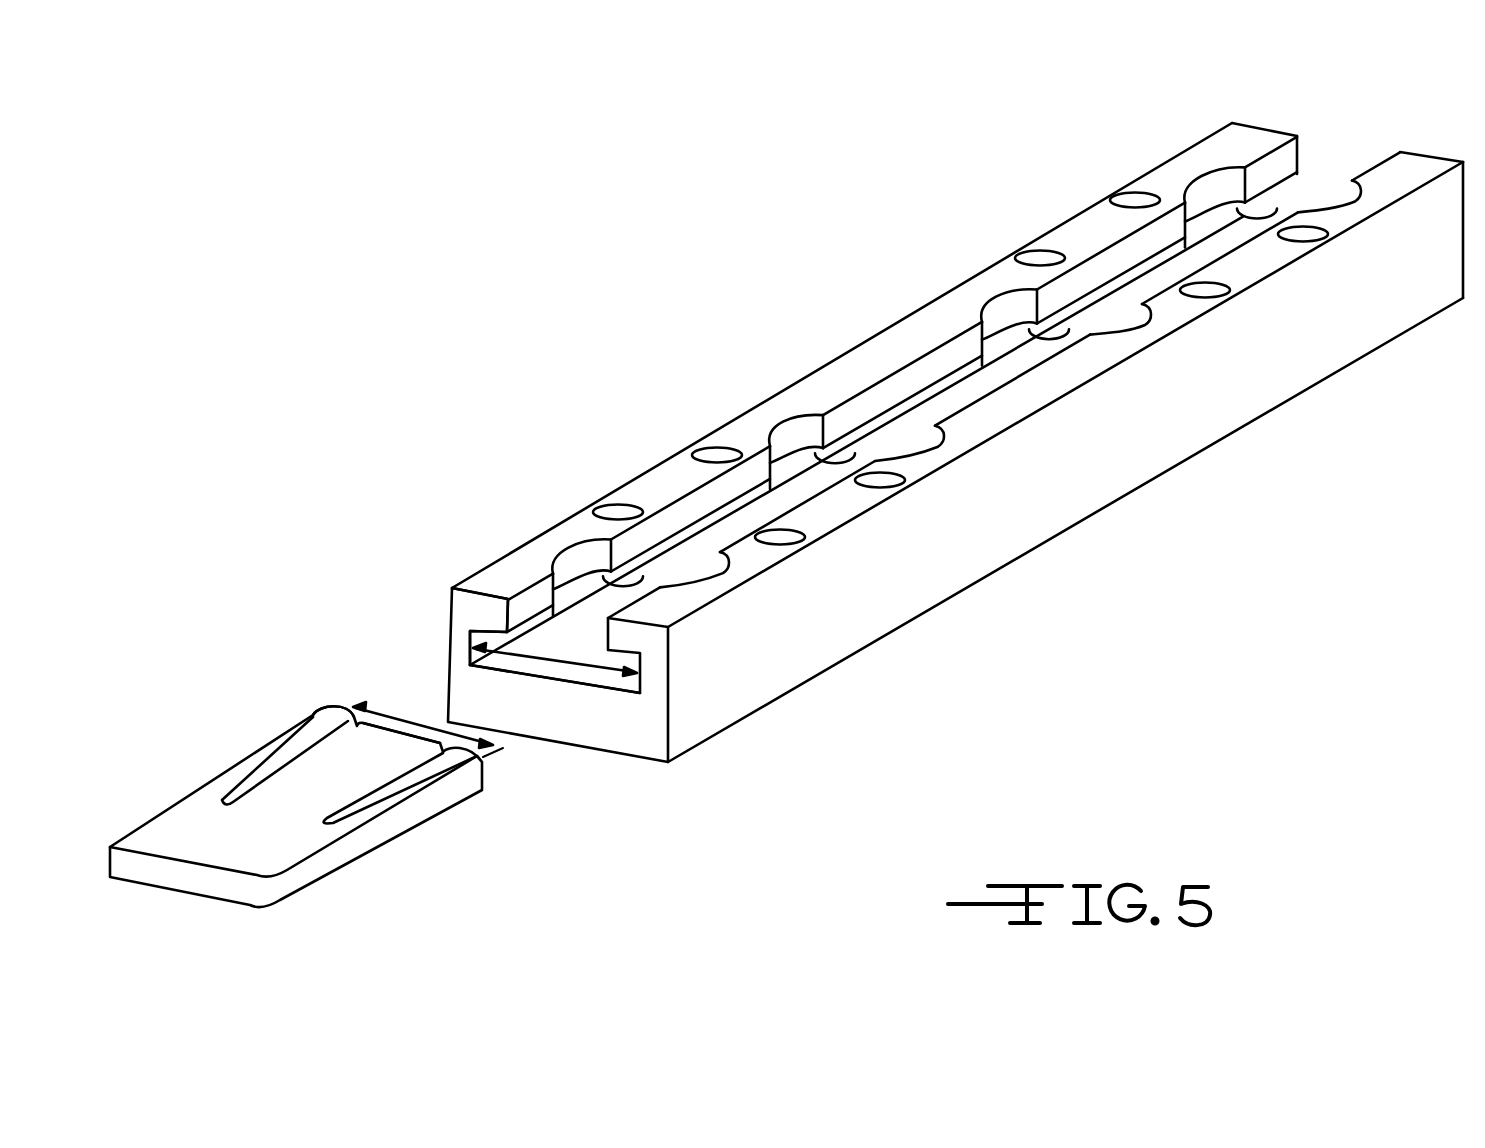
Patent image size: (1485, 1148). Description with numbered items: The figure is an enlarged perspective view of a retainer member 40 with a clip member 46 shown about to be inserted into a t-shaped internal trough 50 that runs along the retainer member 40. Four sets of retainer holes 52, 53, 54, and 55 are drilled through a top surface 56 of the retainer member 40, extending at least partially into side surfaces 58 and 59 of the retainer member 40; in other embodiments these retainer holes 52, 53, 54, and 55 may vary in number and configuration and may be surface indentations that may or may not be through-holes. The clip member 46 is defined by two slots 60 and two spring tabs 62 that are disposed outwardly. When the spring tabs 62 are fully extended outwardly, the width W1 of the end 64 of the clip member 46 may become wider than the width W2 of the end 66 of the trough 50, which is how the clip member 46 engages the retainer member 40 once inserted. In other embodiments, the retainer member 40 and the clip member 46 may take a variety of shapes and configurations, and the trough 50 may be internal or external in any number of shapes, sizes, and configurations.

The retainer member 40 is at (845, 638).
The clip member 46 is at (334, 853).
The t-shaped internal trough 50 is at (592, 680).
The retainer holes 52 is at (780, 537).
The retainer holes 53 is at (878, 478).
The retainer holes 54 is at (1205, 290).
The retainer holes 55 is at (1283, 232).
The top surface 56 is at (876, 356).
The side surface 58 is at (452, 627).
The side surface 59 is at (644, 685).
The slots 60 is at (336, 711).
The spring tabs 62 is at (316, 718).
The end of the clip member 64 is at (330, 714).
The end of the trough 66 is at (462, 628).
The width of the end of the clip member W1 is at (406, 718).
The width of the end of the trough W2 is at (555, 652).